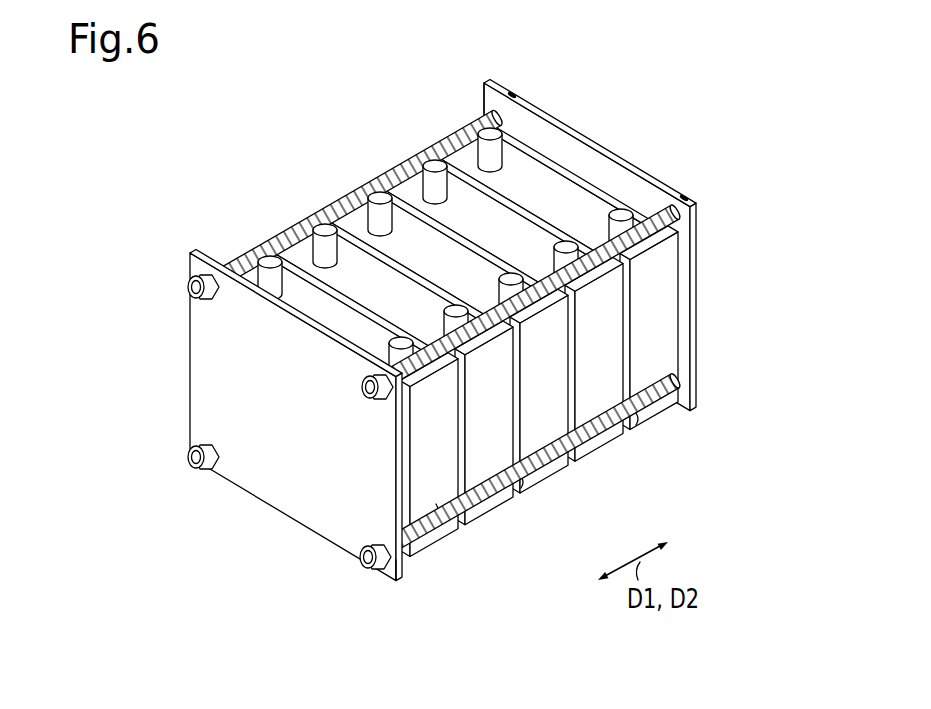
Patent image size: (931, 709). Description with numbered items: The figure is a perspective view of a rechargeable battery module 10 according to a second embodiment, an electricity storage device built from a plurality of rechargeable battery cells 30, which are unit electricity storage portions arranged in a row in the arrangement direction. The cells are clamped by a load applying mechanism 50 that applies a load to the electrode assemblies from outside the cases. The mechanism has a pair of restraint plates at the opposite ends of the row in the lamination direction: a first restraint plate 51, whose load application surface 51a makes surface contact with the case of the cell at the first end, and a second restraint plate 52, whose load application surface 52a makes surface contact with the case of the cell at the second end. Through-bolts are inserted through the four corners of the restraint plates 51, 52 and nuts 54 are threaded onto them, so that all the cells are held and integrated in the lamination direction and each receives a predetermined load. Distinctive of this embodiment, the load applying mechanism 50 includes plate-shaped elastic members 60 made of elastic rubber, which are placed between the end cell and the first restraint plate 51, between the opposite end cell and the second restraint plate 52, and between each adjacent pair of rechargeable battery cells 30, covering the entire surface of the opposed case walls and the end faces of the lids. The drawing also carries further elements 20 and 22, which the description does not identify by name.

The rechargeable battery module 10 is at (289, 123).
The battery cell 20 is at (479, 127).
The electrode terminal 22 is at (608, 216).
The rechargeable battery cell 30 is at (438, 512).
The load applying mechanism 50 is at (699, 350).
The first restraint plate 51 is at (189, 359).
The load application surface 51a is at (405, 566).
The second restraint plate 52 is at (605, 153).
The load application surface 52a is at (558, 147).
The nut 54 is at (190, 273).
The elastic member 60 is at (414, 474).